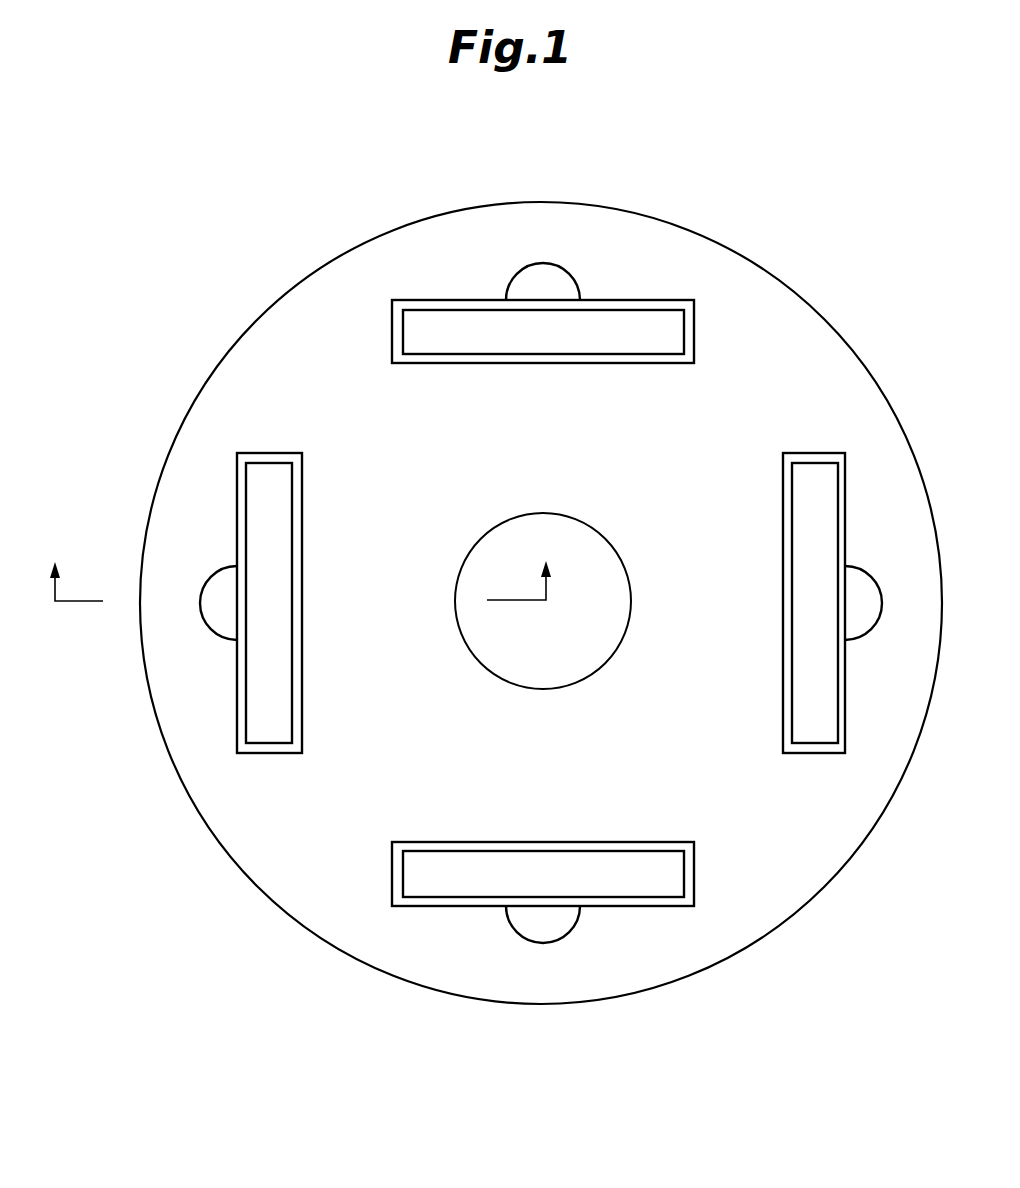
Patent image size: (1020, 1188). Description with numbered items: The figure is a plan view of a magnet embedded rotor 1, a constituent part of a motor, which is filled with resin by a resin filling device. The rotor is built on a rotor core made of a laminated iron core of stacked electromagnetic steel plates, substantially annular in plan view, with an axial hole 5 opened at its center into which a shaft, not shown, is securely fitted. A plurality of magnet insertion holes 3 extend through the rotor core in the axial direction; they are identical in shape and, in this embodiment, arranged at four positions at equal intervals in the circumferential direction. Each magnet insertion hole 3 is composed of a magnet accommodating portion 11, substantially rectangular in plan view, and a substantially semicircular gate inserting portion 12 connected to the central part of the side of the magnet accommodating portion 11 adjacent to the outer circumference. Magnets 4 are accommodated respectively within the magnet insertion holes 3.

The magnet embedded rotor 1 is at (738, 178).
The magnet insertion hole 3 is at (636, 275).
The magnet 4 is at (442, 320).
The axial hole 5 is at (550, 683).
The magnet accommodating portion 11 is at (583, 357).
The gate inserting portion 12 is at (555, 285).